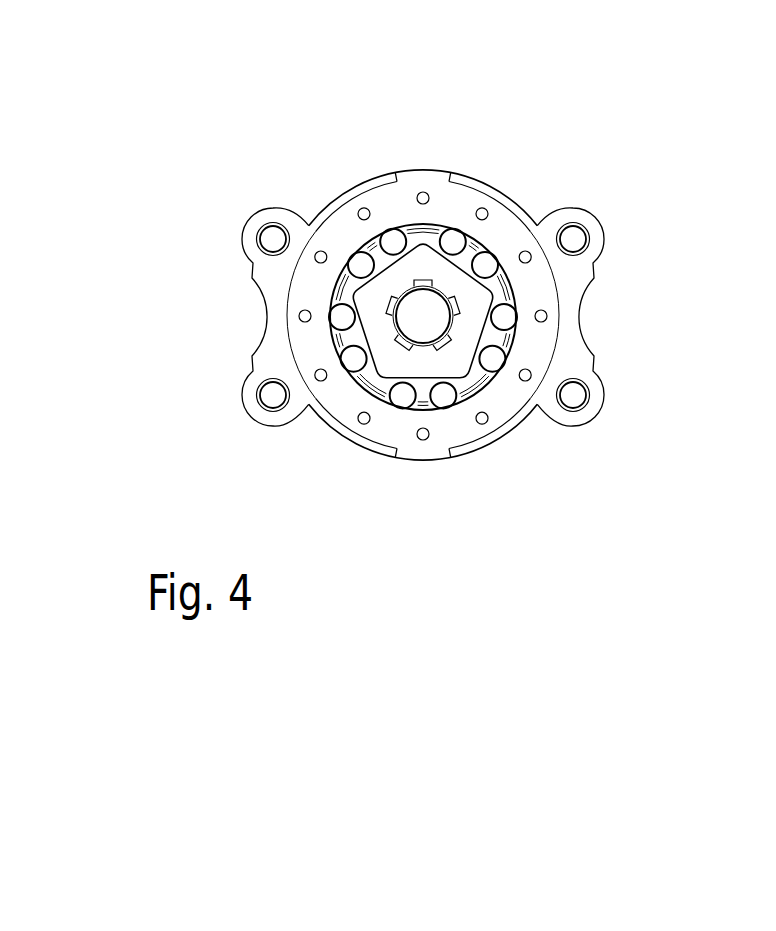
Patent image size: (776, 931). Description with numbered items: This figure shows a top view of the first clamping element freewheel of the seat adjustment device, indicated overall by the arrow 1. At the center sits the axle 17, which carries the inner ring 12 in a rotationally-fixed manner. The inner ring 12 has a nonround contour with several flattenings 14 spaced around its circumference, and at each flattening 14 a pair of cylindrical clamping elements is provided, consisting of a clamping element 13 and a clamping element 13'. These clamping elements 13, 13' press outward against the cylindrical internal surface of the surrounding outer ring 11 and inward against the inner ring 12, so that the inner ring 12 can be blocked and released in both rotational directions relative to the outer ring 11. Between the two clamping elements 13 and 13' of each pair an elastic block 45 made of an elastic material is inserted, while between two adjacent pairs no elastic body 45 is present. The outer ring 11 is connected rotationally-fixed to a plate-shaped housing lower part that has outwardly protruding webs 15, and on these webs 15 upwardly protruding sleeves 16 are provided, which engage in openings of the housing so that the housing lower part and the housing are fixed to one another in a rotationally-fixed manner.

The bearing assembly 1 is at (637, 287).
The outer ring 11 is at (538, 292).
The inner ring 12 is at (420, 268).
The clamping element 13 is at (410, 391).
The clamping element 13' is at (288, 405).
The flattening 14 is at (375, 248).
The web 15 is at (282, 315).
The sleeve 16 is at (281, 245).
The axle 17 is at (427, 314).
The elastic block 45 is at (347, 338).